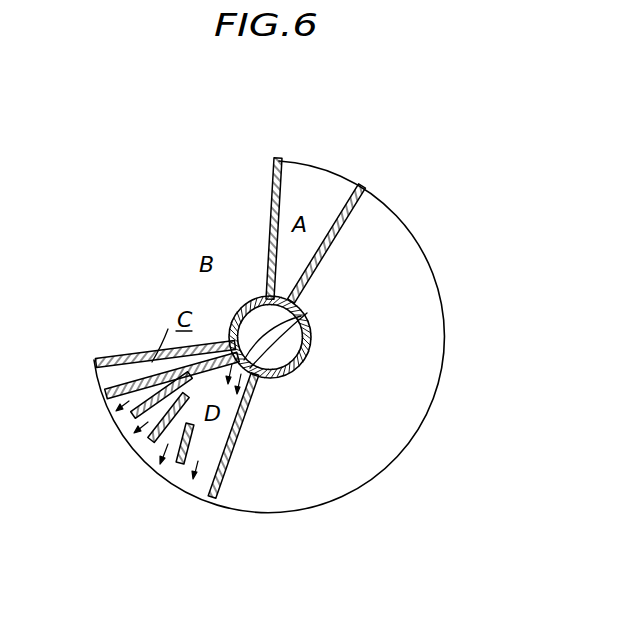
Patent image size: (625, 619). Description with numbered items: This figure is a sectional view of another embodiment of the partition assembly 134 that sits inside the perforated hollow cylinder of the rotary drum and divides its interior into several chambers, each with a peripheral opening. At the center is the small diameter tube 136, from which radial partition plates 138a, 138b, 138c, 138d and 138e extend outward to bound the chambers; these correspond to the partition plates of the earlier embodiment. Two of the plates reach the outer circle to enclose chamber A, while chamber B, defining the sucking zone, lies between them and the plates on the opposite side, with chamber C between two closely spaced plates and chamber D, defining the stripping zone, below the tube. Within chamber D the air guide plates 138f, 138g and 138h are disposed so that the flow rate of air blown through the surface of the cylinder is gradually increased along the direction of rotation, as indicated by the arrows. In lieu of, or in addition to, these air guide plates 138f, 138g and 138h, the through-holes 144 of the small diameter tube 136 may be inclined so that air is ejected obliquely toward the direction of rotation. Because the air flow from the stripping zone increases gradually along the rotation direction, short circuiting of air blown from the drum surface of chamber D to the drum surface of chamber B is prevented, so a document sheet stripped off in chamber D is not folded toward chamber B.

The partition assembly 134 is at (421, 234).
The small diameter tube 136 is at (310, 347).
The through-holes 144 is at (300, 317).
The partition plate 138a is at (352, 212).
The partition plate 138b is at (272, 183).
The partition plate 138c is at (126, 356).
The partition plate 138d is at (104, 387).
The partition plate 138e is at (213, 498).
The air guide plate 138f is at (131, 417).
The air guide plate 138g is at (148, 442).
The air guide plate 138h is at (177, 465).